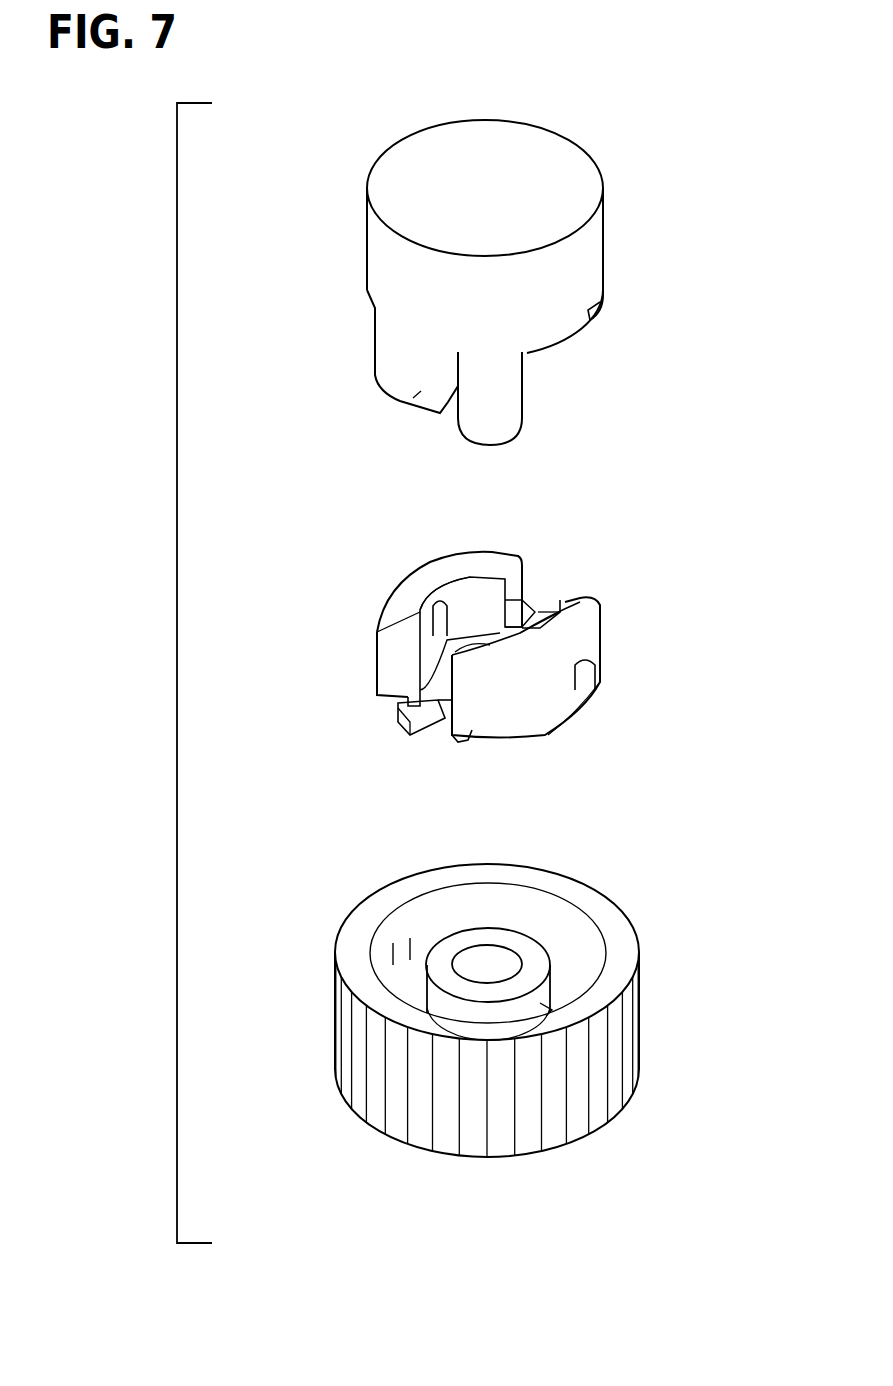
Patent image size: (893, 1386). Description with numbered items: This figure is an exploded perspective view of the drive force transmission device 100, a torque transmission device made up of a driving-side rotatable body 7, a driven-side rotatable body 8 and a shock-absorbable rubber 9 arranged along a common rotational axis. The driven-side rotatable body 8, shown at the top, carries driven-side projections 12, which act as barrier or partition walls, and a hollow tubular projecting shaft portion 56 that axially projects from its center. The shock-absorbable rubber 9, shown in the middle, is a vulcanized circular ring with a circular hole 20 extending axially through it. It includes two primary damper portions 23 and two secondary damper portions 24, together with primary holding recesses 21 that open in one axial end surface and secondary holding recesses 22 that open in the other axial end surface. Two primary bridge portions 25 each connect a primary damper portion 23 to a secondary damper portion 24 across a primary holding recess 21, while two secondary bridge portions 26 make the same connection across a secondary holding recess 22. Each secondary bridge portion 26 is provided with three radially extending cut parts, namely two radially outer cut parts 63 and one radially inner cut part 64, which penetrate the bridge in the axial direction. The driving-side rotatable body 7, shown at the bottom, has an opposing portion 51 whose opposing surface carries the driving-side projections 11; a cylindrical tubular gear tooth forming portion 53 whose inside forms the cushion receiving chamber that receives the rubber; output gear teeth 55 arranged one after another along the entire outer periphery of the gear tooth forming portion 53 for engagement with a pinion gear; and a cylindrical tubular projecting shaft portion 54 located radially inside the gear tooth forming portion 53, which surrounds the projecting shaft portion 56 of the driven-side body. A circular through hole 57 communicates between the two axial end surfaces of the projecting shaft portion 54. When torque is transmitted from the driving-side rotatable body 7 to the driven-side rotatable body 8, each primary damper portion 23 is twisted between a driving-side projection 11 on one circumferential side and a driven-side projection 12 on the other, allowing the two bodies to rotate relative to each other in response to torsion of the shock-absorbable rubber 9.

The drive force transmission device 100 is at (176, 593).
The driven-side rotatable body 8 is at (593, 243).
The driven-side projections 12 is at (412, 400).
The projecting shaft portion 56 is at (525, 400).
The shock-absorbable rubber 9 is at (478, 638).
The circular hole 20 is at (490, 645).
The primary holding recesses 21 is at (440, 612).
The secondary holding recesses 22 is at (525, 597).
The primary damper portions 23 is at (495, 550).
The secondary damper portions 24 is at (376, 607).
The primary bridge portions 25 is at (403, 565).
The secondary bridge portions 26 is at (548, 608).
The radially outer cut parts 63 is at (378, 694).
The radially inner cut part 64 is at (470, 720).
The driving-side rotatable body 7 is at (499, 1024).
The gear tooth forming portion 53 is at (565, 890).
The projecting shaft portion 54 is at (528, 948).
The opposing portion 51 is at (552, 997).
The through hole 57 is at (492, 955).
The output gear teeth 55 is at (598, 1090).
The driving-side projections 11 is at (412, 945).